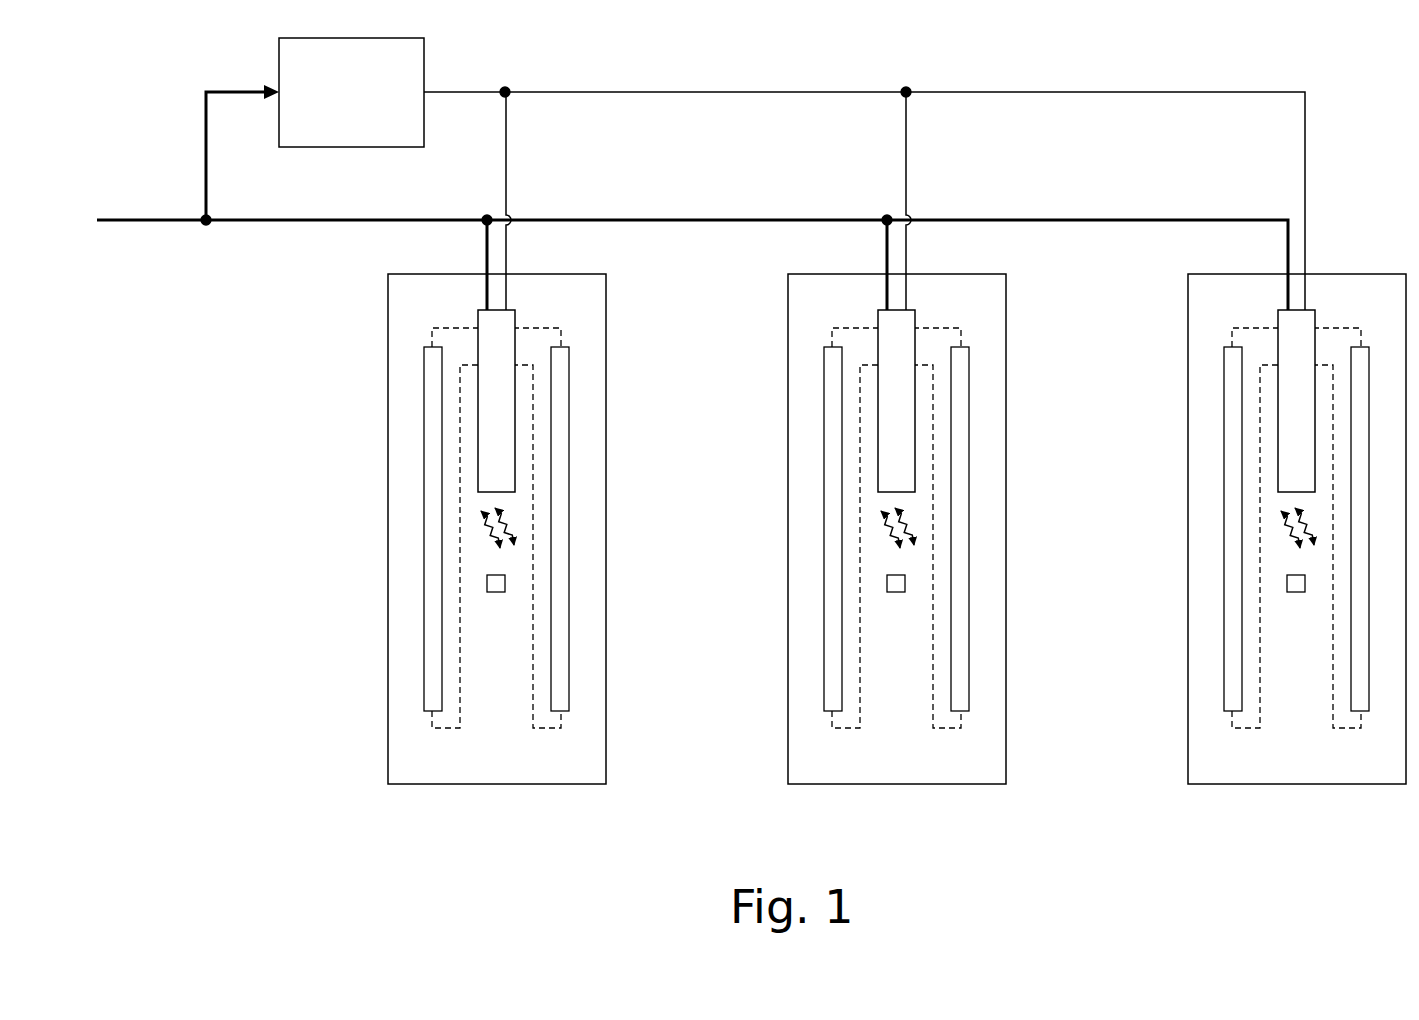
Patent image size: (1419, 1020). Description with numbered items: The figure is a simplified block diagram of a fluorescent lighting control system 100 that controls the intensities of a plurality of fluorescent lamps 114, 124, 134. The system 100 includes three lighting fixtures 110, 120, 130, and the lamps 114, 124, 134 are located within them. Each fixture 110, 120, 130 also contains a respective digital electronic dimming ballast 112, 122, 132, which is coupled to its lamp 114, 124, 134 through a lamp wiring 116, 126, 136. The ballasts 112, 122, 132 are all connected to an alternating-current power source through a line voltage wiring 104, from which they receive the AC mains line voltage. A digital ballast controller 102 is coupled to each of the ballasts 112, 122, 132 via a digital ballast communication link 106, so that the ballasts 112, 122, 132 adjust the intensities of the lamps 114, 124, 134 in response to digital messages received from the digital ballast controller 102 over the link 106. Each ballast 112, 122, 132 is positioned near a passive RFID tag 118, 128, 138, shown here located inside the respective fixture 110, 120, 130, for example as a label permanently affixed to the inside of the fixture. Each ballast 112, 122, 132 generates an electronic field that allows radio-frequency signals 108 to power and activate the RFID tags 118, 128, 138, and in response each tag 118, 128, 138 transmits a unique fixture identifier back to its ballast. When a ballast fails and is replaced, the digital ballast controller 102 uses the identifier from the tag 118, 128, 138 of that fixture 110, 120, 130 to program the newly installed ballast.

The fluorescent lighting control system 100 is at (276, 694).
The digital ballast controller 102 is at (415, 57).
The line voltage wiring 104 is at (698, 220).
The digital ballast communication link 106 is at (680, 92).
The radio-frequency signals 108 is at (479, 541).
The lighting fixture 110 is at (488, 784).
The digital electronic dimming ballast 112 is at (504, 318).
The fluorescent lamp 114 is at (567, 690).
The lamp wiring 116 is at (533, 690).
The RFID tag 118 is at (496, 592).
The lighting fixture 120 is at (897, 571).
The digital electronic dimming ballast 122 is at (932, 389).
The fluorescent lamp 124 is at (904, 562).
The lamp wiring 126 is at (896, 544).
The RFID tag 128 is at (893, 609).
The lighting fixture 130 is at (1297, 585).
The digital electronic dimming ballast 132 is at (1332, 389).
The fluorescent lamp 134 is at (1304, 562).
The lamp wiring 136 is at (1296, 544).
The RFID tag 138 is at (1293, 609).